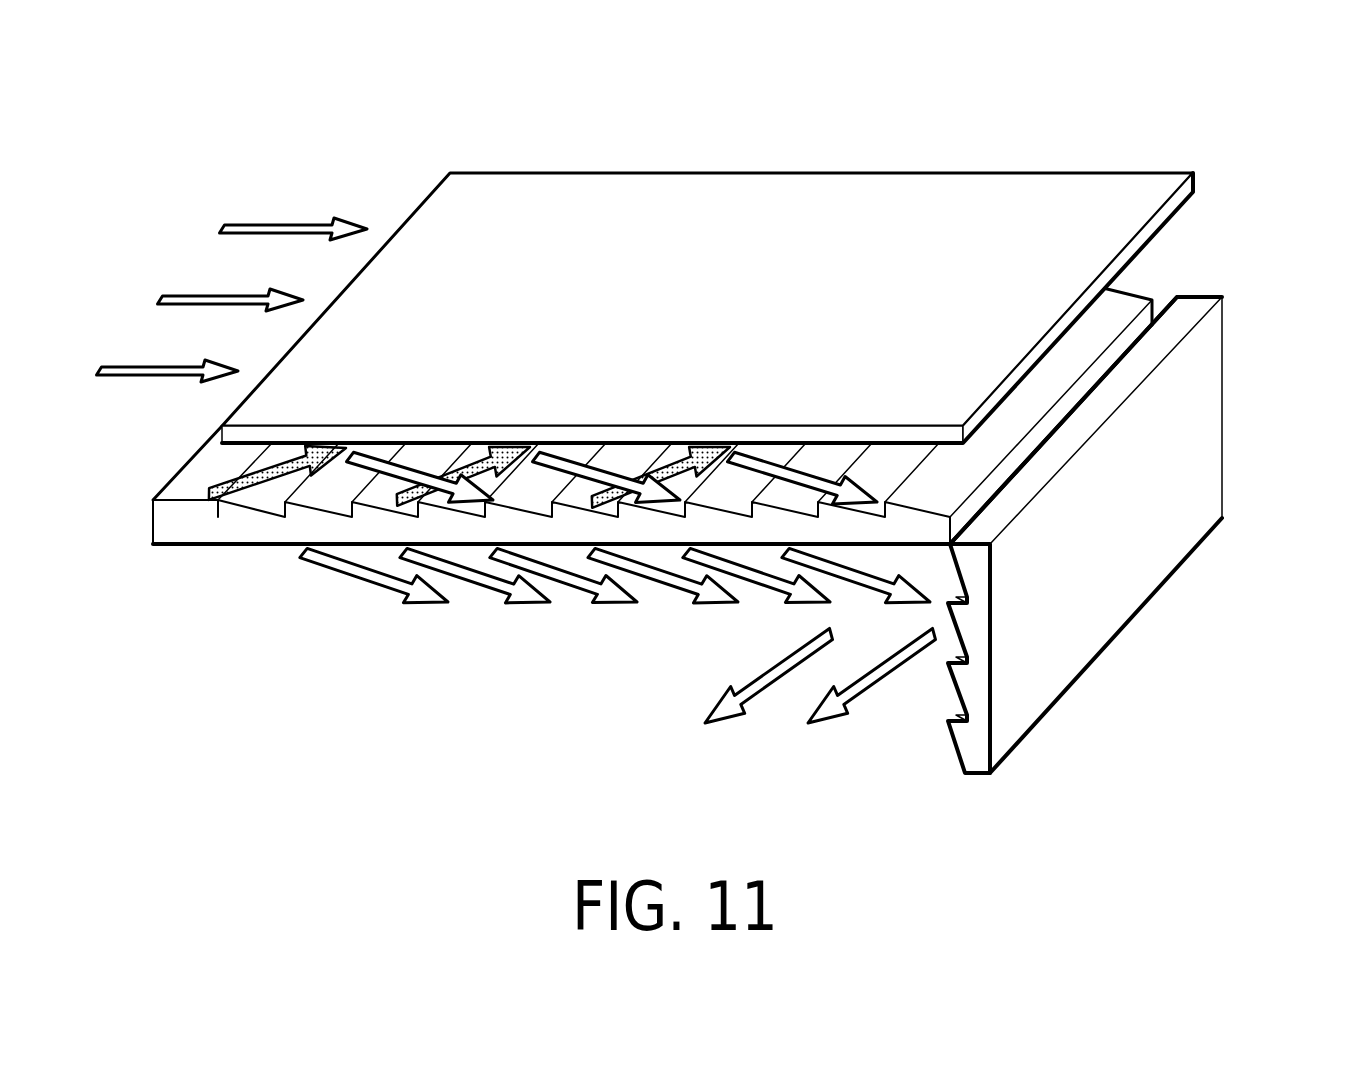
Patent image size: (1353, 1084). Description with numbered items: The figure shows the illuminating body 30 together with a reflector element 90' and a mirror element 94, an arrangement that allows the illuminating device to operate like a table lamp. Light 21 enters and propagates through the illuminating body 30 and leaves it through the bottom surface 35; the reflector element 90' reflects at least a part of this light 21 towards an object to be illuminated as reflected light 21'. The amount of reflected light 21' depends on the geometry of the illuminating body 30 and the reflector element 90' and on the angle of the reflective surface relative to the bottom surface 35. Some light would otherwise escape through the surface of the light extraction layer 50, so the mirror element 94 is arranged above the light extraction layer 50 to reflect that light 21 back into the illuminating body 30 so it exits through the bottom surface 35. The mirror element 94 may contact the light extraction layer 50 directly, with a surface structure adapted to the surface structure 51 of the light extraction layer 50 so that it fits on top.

The mirror element 94 is at (626, 207).
The light 21 is at (497, 442).
The reflected light 21' is at (820, 703).
The surface structure 51 is at (1117, 303).
The reflector element 90' is at (1134, 535).
The light extraction layer 50 is at (615, 471).
The illuminating body 30 is at (192, 528).
The bottom surface 35 is at (268, 548).